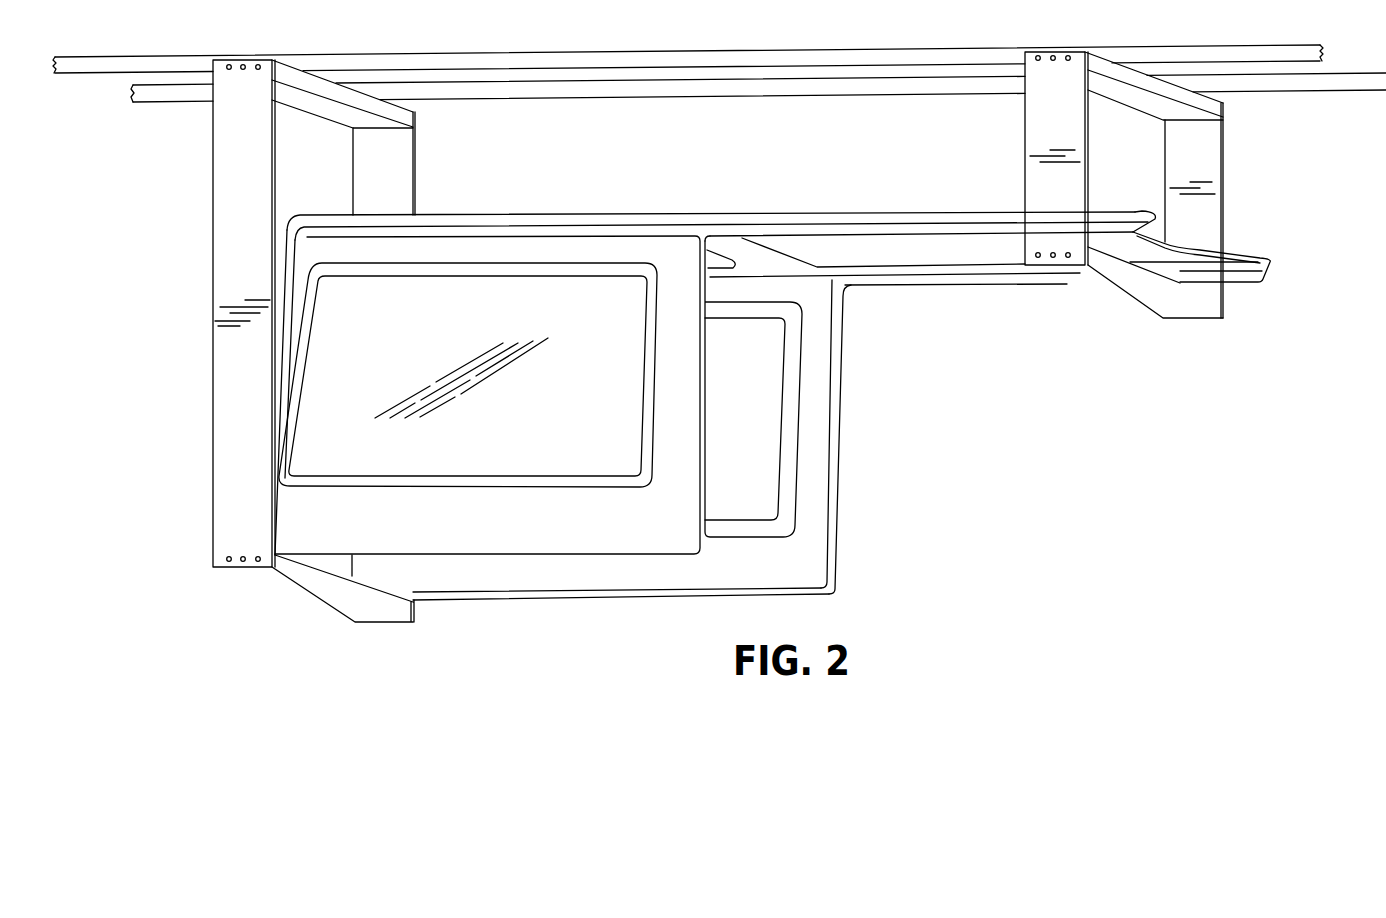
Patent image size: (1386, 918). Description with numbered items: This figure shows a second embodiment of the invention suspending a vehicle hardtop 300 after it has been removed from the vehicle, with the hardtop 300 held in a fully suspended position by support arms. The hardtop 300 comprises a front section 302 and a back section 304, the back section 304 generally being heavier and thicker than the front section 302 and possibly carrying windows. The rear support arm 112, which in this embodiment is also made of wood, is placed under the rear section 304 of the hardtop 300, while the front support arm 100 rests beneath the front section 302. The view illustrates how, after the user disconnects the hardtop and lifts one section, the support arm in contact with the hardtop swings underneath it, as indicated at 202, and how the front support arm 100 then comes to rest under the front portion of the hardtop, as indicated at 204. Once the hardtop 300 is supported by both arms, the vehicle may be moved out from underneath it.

The front support arm 100 is at (1226, 200).
The rear support arm 112 is at (213, 184).
The support arm position under the hardtop 202 is at (277, 600).
The front support arm resting position 204 is at (1187, 327).
The hardtop 300 is at (863, 530).
The front section 302 is at (968, 293).
The back section 304 is at (583, 602).